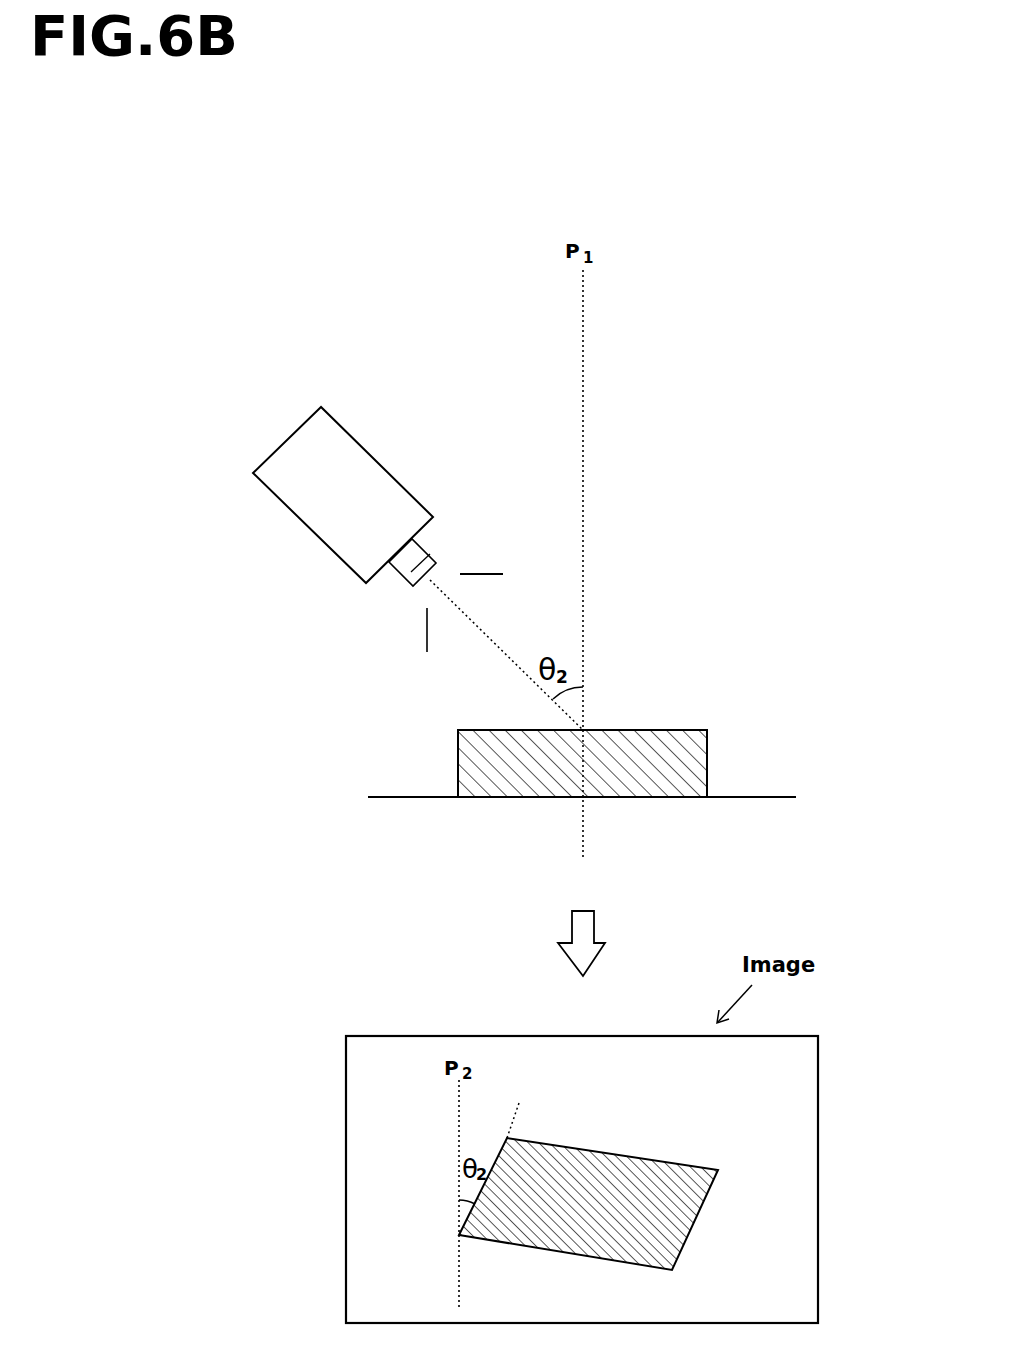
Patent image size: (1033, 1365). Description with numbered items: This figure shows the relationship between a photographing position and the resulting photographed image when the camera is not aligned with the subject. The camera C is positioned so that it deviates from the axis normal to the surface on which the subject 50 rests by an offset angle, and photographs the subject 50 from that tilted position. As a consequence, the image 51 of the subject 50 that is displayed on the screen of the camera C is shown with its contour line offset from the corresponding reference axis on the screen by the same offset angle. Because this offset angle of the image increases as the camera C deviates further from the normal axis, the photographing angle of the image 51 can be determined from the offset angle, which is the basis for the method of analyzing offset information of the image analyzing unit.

The camera C is at (372, 449).
The subject 50 is at (707, 744).
The image 51 is at (638, 1153).